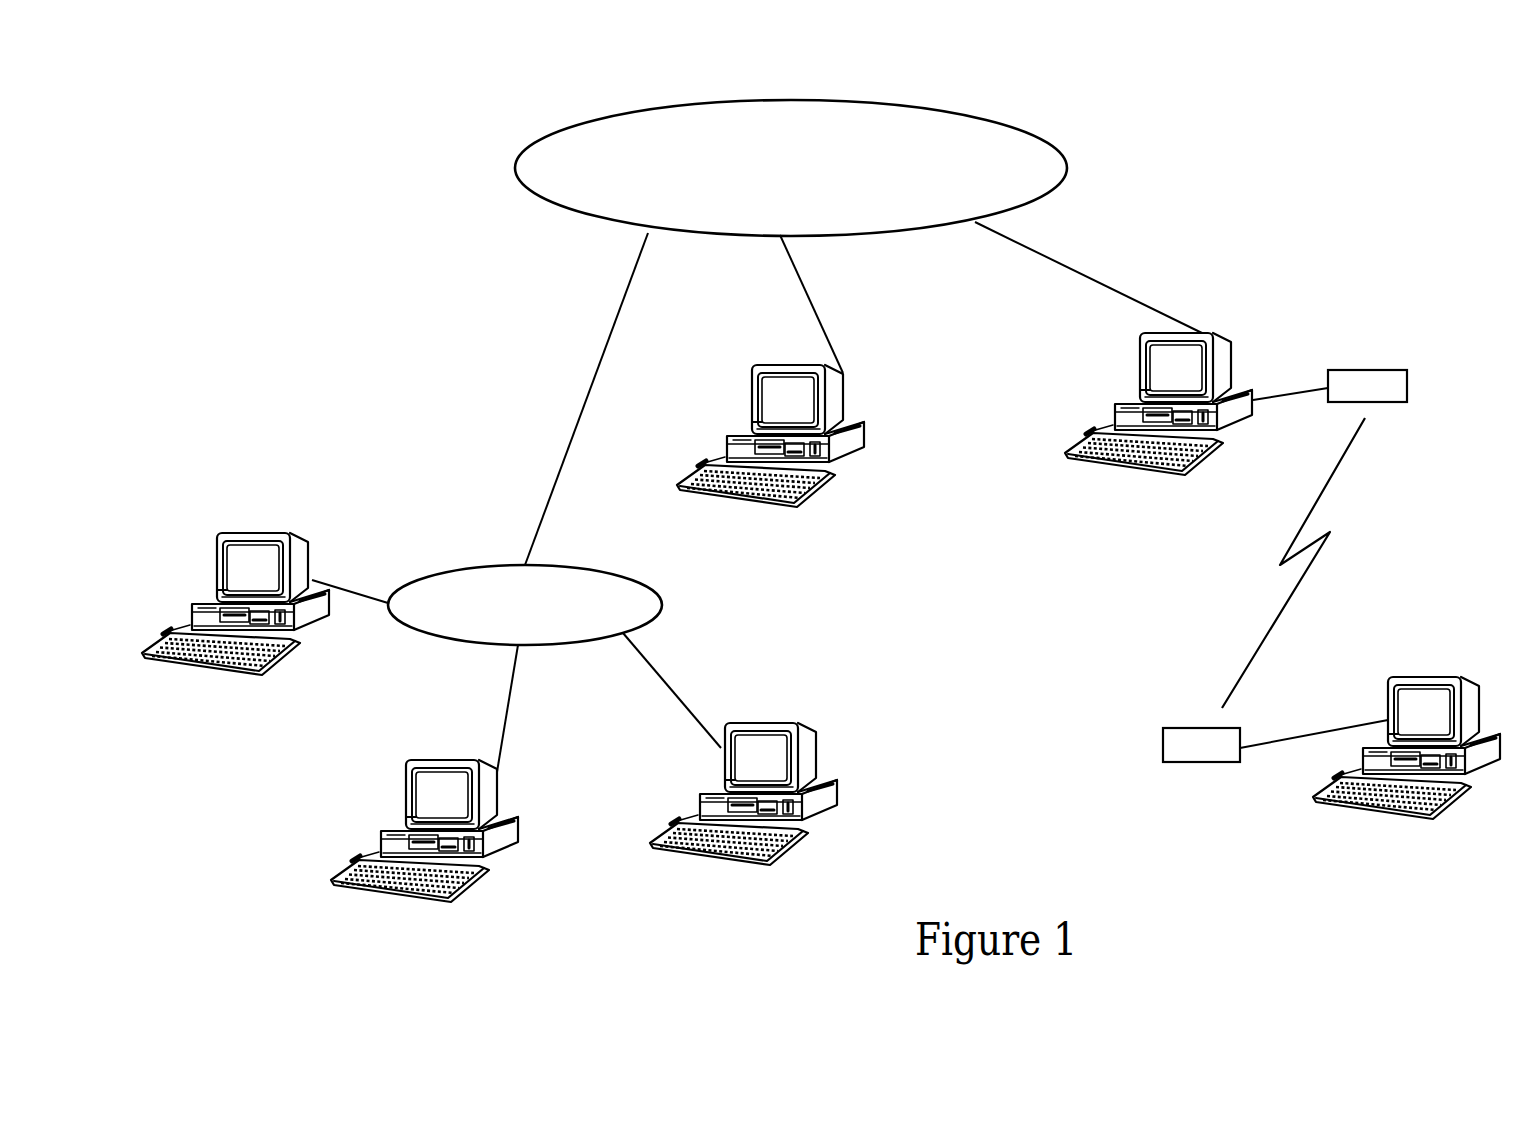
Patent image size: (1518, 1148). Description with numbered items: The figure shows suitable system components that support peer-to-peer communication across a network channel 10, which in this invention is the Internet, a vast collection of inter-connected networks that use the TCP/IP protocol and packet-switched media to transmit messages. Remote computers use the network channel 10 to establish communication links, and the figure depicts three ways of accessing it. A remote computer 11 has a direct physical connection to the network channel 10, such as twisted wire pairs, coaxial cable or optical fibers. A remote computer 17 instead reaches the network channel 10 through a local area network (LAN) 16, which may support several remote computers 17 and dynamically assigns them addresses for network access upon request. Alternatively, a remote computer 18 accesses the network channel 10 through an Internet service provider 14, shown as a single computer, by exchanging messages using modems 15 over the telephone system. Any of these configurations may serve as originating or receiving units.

The network channel 10 is at (552, 153).
The remote computer 11 is at (847, 445).
The Internet service provider 14 is at (1227, 357).
The modem 15 is at (1385, 393).
The local area network (LAN) 16 is at (455, 630).
The remote computer 17 is at (303, 552).
The remote computer 18 is at (1475, 697).